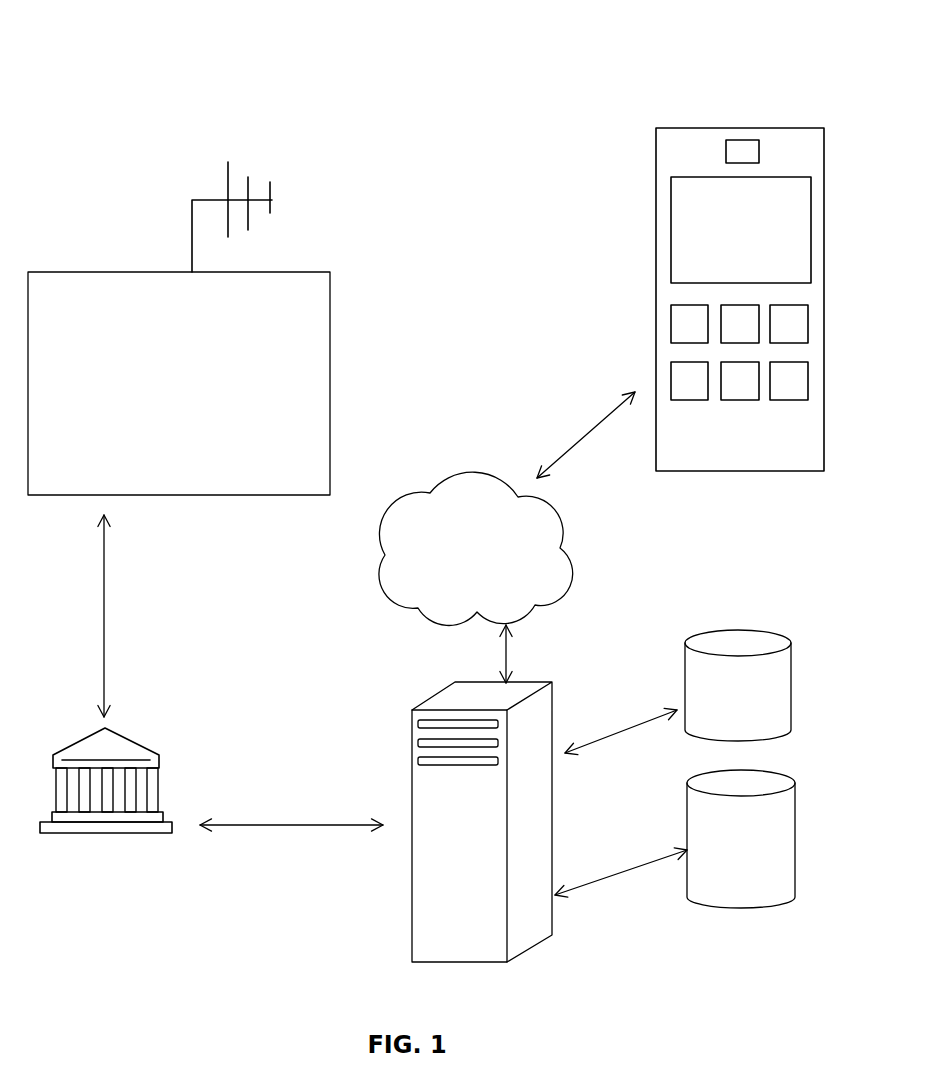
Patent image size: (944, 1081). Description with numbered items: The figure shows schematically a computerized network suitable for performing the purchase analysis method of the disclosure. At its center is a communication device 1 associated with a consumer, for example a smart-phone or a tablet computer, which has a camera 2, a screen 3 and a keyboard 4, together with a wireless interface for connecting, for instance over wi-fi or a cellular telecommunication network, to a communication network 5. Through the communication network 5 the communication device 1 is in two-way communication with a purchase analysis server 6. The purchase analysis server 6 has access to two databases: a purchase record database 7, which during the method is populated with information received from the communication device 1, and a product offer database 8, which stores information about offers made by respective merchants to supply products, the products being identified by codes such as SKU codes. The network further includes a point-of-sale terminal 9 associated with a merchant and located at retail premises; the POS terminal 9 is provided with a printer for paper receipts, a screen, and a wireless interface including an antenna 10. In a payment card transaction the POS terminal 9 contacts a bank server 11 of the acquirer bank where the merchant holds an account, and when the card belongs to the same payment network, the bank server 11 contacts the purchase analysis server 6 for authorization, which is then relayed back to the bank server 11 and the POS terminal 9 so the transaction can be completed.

The communication device 1 is at (707, 127).
The camera 2 is at (738, 140).
The screen 3 is at (791, 260).
The keyboard 4 is at (836, 438).
The communication network 5 is at (476, 548).
The purchase analysis server 6 is at (413, 787).
The purchase record database 7 is at (683, 680).
The product offer database 8 is at (738, 908).
The point-of-sale (POS) terminal 9 is at (122, 272).
The antenna 10 is at (265, 155).
The bank server 11 is at (133, 740).